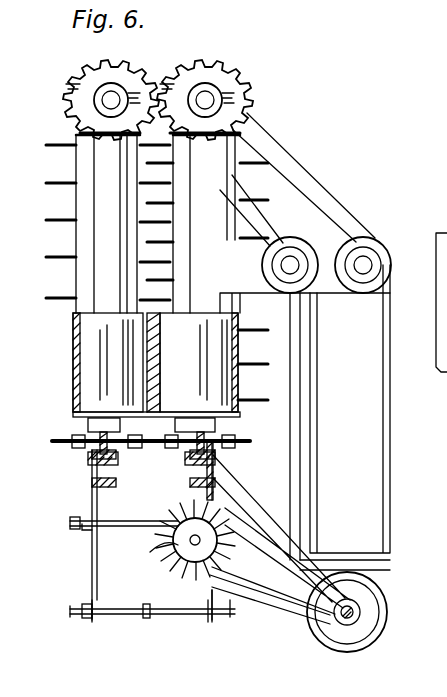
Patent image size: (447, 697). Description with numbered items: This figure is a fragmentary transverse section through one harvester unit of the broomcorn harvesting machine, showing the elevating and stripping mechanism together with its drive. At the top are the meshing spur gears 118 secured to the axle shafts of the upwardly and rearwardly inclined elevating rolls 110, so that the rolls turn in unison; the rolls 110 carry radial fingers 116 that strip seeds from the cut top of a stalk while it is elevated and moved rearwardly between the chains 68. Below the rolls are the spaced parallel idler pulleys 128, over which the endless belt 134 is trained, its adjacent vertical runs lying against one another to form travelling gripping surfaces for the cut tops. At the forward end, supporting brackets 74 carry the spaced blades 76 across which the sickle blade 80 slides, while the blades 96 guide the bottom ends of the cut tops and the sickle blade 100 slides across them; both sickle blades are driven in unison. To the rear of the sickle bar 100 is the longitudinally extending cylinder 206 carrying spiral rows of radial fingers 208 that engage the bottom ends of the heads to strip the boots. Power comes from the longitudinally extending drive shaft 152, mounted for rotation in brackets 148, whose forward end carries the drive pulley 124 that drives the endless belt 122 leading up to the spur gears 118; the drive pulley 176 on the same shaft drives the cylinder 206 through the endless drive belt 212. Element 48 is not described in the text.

The spur gears 118 is at (134, 79).
The elevating rolls 110 is at (76, 196).
The radial fingers 116 is at (50, 257).
The idler pulleys 128 is at (92, 378).
The endless belt 134 is at (240, 346).
The chains 68 is at (78, 450).
The supporting brackets 74 is at (92, 578).
The sickle blade 100 is at (128, 521).
The blades 96 is at (92, 535).
The radial fingers 208 is at (160, 545).
The sickle blade 80 is at (118, 608).
The blades 76 is at (112, 626).
The cylinder 206 is at (192, 563).
The brackets 148 is at (266, 522).
The endless drive belt 212 is at (284, 607).
The endless belt 122 is at (390, 497).
The drive pulley 124 is at (380, 632).
The drive pulley 176 is at (350, 626).
The drive shaft 152 is at (353, 612).
The housing 48 is at (437, 284).